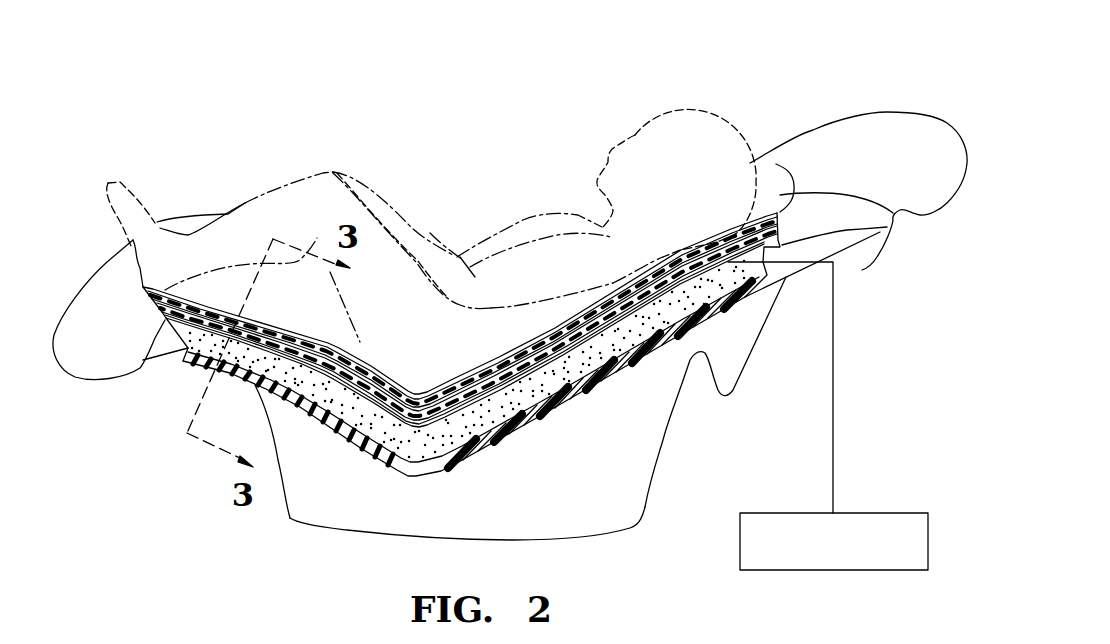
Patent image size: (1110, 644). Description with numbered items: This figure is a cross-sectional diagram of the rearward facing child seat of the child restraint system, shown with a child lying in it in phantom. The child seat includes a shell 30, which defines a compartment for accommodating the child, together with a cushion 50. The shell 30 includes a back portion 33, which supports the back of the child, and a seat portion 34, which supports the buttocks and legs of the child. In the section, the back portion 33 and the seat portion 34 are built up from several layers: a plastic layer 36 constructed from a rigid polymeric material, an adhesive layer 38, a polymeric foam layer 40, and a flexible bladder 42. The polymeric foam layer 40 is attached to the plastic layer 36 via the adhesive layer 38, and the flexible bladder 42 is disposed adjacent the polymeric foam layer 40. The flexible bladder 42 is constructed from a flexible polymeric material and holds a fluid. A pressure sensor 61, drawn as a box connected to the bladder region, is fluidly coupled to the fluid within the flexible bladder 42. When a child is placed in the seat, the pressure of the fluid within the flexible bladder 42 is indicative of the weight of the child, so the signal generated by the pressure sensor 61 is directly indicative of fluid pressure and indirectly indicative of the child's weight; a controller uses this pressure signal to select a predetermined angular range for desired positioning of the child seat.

The shell 30 is at (676, 403).
The back portion 33 is at (520, 418).
The seat portion 34 is at (318, 410).
The plastic layer 36 is at (702, 330).
The adhesive layer 38 is at (755, 287).
The polymeric foam layer 40 is at (538, 281).
The flexible bladder 42 is at (768, 222).
The cushion 50 is at (752, 212).
The pressure sensor 61 is at (868, 513).